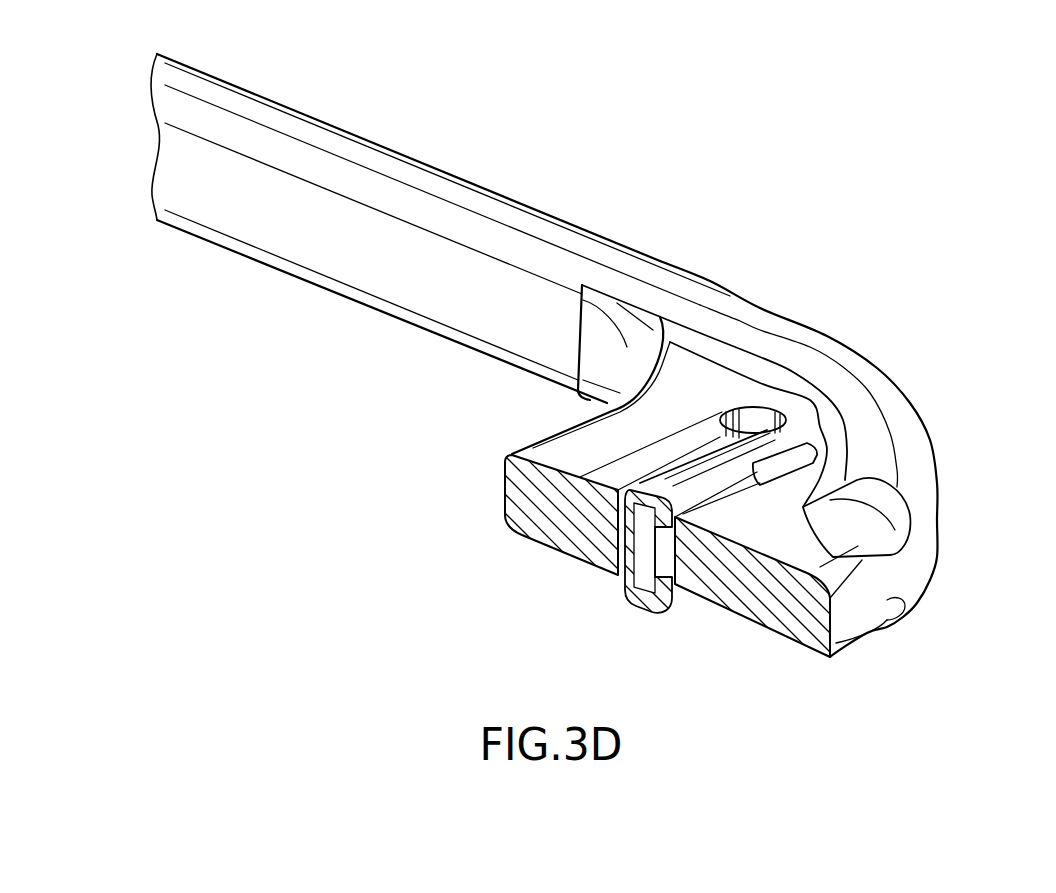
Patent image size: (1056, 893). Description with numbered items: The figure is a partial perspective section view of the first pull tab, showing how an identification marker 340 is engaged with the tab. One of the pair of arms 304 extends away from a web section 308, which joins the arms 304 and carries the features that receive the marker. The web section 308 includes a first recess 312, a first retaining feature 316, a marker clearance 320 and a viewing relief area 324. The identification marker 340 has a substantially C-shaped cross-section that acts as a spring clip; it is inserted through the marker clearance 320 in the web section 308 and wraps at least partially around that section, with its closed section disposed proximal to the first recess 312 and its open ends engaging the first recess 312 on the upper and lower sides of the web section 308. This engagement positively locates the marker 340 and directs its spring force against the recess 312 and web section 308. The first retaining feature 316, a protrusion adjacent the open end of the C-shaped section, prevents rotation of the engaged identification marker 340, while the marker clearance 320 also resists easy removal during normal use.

The arms 304 is at (345, 167).
The web section 308 is at (505, 480).
The first recess 312 is at (698, 578).
The first retaining feature 316 is at (810, 450).
The marker clearance 320 is at (748, 413).
The viewing relief area 324 is at (858, 549).
The identification marker 340 is at (633, 605).